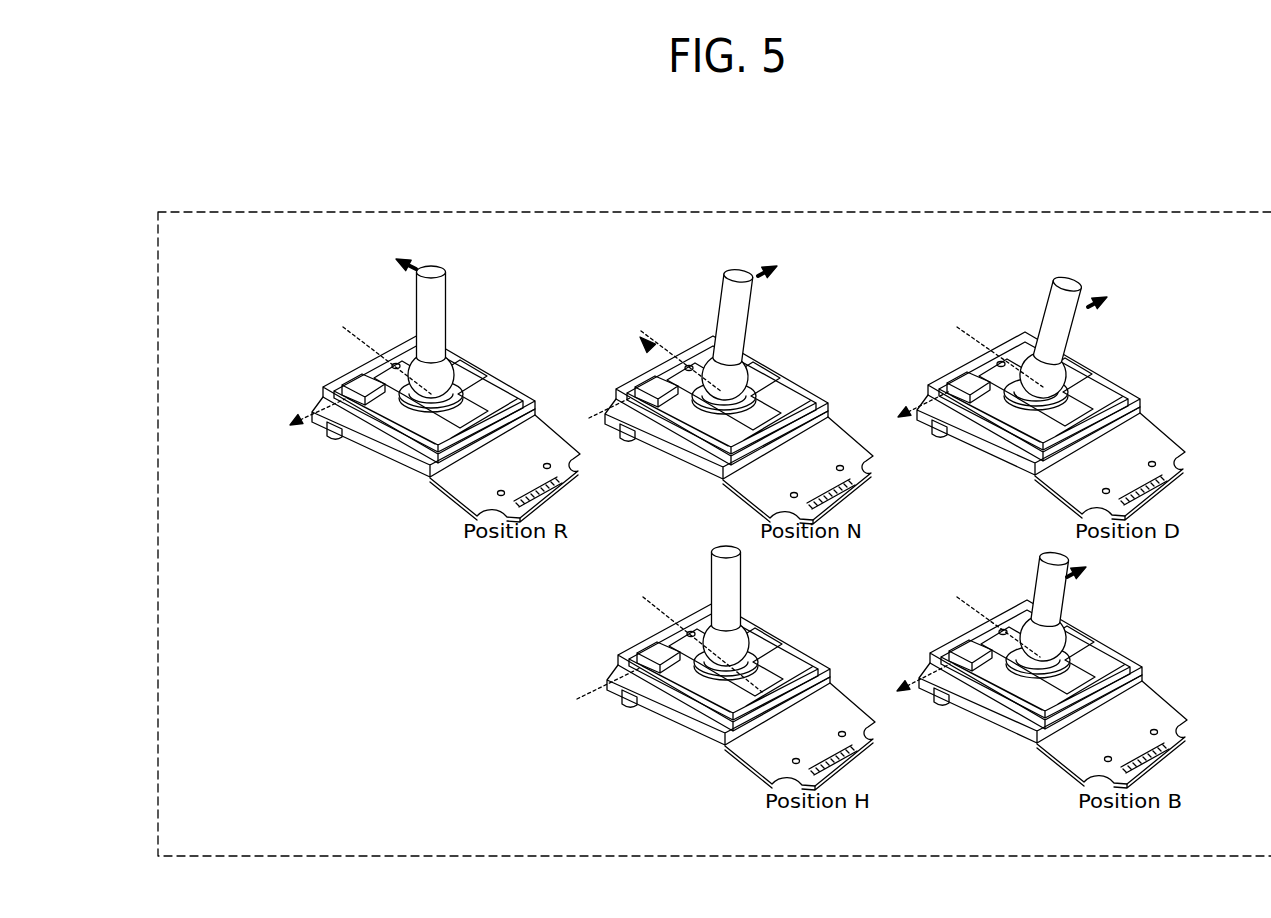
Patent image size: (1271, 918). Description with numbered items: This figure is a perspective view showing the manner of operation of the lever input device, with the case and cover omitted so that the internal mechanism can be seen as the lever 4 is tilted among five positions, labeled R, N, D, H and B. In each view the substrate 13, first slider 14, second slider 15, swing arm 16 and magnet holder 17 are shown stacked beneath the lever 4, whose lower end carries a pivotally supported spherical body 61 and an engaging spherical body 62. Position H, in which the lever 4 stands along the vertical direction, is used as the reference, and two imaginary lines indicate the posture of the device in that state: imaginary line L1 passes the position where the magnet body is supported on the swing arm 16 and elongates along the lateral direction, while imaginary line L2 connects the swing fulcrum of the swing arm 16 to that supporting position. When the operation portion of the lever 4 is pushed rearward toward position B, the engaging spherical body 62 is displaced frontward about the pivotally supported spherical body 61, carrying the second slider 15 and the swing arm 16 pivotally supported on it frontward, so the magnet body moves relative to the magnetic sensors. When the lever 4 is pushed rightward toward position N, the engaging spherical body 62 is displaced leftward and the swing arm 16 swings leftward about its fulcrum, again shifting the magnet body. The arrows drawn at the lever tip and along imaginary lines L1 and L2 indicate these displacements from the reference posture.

The lever 4 is at (712, 558).
The substrate 13 is at (874, 746).
The first slider 14 is at (678, 728).
The second slider 15 is at (835, 672).
The swing arm 16 is at (797, 647).
The magnet holder 17 is at (645, 700).
The pivotally supported spherical body 61 is at (752, 620).
The engaging spherical body 62 is at (768, 632).
The imaginary line L1 is at (287, 423).
The imaginary line L2 is at (690, 499).